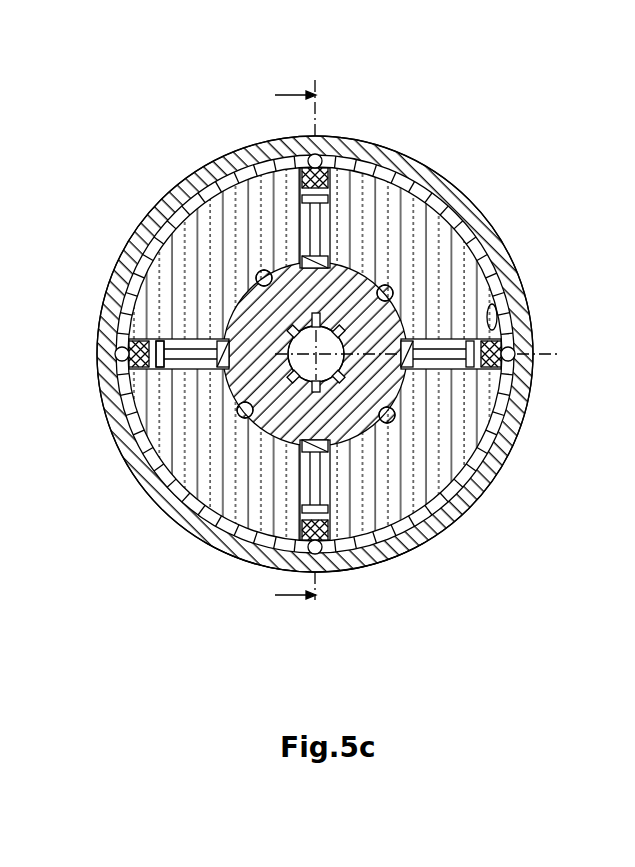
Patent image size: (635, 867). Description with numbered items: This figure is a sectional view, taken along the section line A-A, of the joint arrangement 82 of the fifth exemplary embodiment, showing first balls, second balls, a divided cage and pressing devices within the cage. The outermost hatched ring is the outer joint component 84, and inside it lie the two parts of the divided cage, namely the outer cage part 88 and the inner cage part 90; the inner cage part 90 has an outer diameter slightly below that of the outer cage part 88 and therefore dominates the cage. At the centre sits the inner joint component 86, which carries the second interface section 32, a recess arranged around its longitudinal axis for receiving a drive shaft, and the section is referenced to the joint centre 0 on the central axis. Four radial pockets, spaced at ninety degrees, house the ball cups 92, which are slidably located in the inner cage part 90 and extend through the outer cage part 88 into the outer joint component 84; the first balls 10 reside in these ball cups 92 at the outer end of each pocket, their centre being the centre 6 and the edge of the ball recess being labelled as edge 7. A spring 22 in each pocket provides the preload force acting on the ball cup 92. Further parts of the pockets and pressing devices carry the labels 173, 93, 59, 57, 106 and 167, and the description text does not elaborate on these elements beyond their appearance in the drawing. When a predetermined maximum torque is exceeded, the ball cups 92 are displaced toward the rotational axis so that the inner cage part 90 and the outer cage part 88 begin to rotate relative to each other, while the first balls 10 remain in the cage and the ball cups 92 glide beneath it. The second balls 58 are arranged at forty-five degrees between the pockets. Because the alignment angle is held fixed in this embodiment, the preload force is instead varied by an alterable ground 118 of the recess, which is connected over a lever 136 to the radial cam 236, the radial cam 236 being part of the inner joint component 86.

The joint arrangement 82 is at (106, 110).
The first balls 10 is at (288, 155).
The outer cage part 88 is at (158, 210).
The inner cage part 90 is at (213, 235).
The inner joint component 86 is at (243, 307).
The second balls 58 is at (265, 268).
The second interface section 32 is at (297, 375).
The joint centre 0 is at (320, 380).
The ball cups 92 is at (128, 338).
The spring 22 is at (148, 368).
The ball 173 is at (113, 355).
The vane 93 is at (125, 405).
The spring bar 59 is at (210, 373).
The alterable ground 118 is at (340, 197).
The outer joint component 84 is at (332, 178).
The upper ball 57 is at (322, 158).
The right vane slot 106 is at (410, 336).
The edge 7 is at (490, 330).
The centre of first balls 6 is at (505, 372).
The right ball 167 is at (515, 340).
The radial cam 236 is at (330, 455).
The lever 136 is at (377, 563).